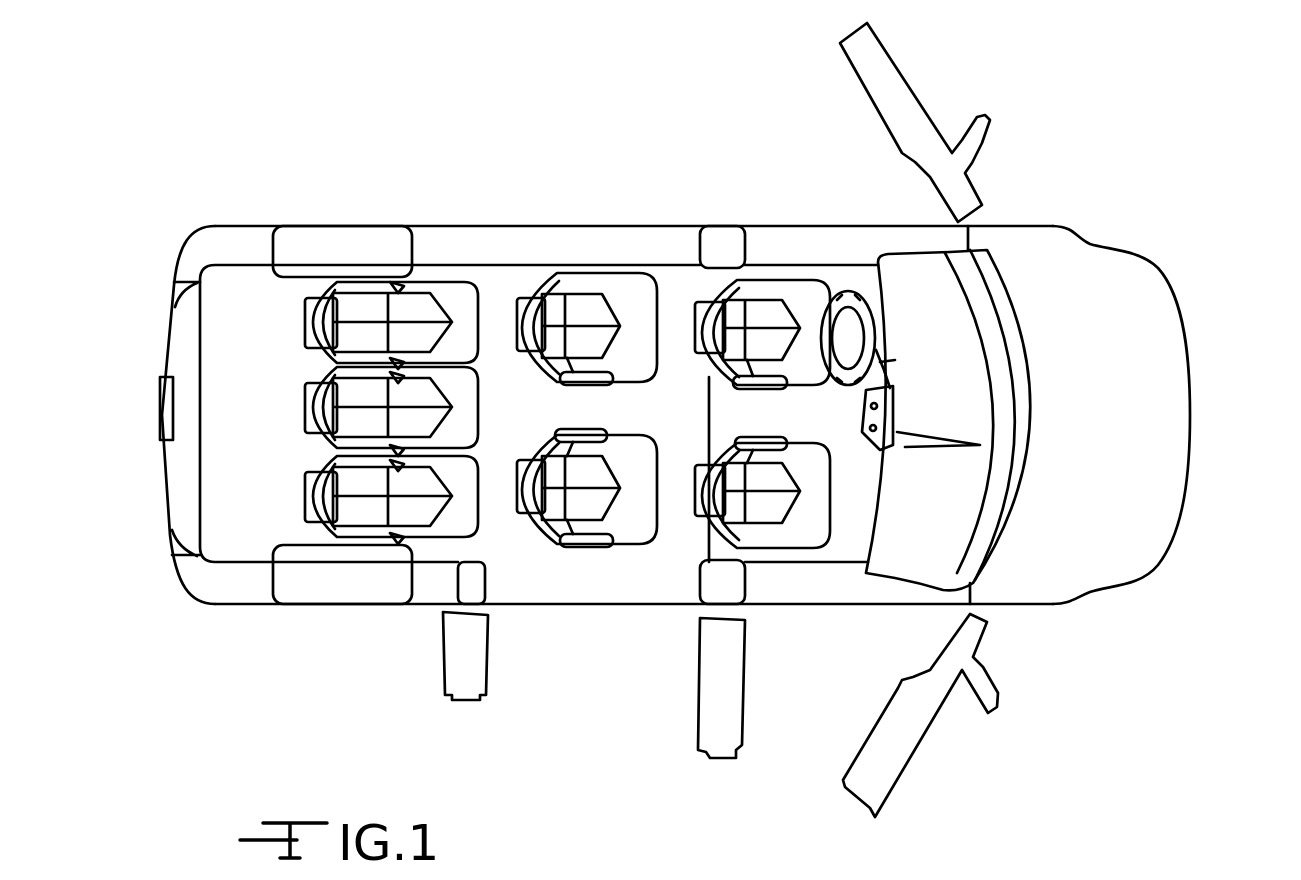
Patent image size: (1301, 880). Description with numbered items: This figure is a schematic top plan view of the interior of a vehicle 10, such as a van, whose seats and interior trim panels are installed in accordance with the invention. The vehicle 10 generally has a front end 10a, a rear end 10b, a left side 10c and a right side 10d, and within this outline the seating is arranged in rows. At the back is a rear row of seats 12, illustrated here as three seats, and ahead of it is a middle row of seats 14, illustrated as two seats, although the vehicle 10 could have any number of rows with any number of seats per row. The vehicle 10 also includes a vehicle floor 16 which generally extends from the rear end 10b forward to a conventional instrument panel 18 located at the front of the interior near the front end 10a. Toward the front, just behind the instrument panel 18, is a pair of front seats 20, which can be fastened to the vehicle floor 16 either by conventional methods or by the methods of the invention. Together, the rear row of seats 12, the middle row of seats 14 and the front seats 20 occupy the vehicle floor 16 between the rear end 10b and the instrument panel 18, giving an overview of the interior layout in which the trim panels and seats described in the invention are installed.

The vehicle 10 is at (658, 358).
The front end 10a is at (1188, 357).
The rear end 10b is at (163, 492).
The left side 10c is at (597, 226).
The right side 10d is at (336, 604).
The rear row of seats 12 is at (303, 405).
The middle row of seats 14 is at (540, 280).
The vehicle floor 16 is at (523, 423).
The instrument panel 18 is at (965, 345).
The front seats 20 is at (805, 290).